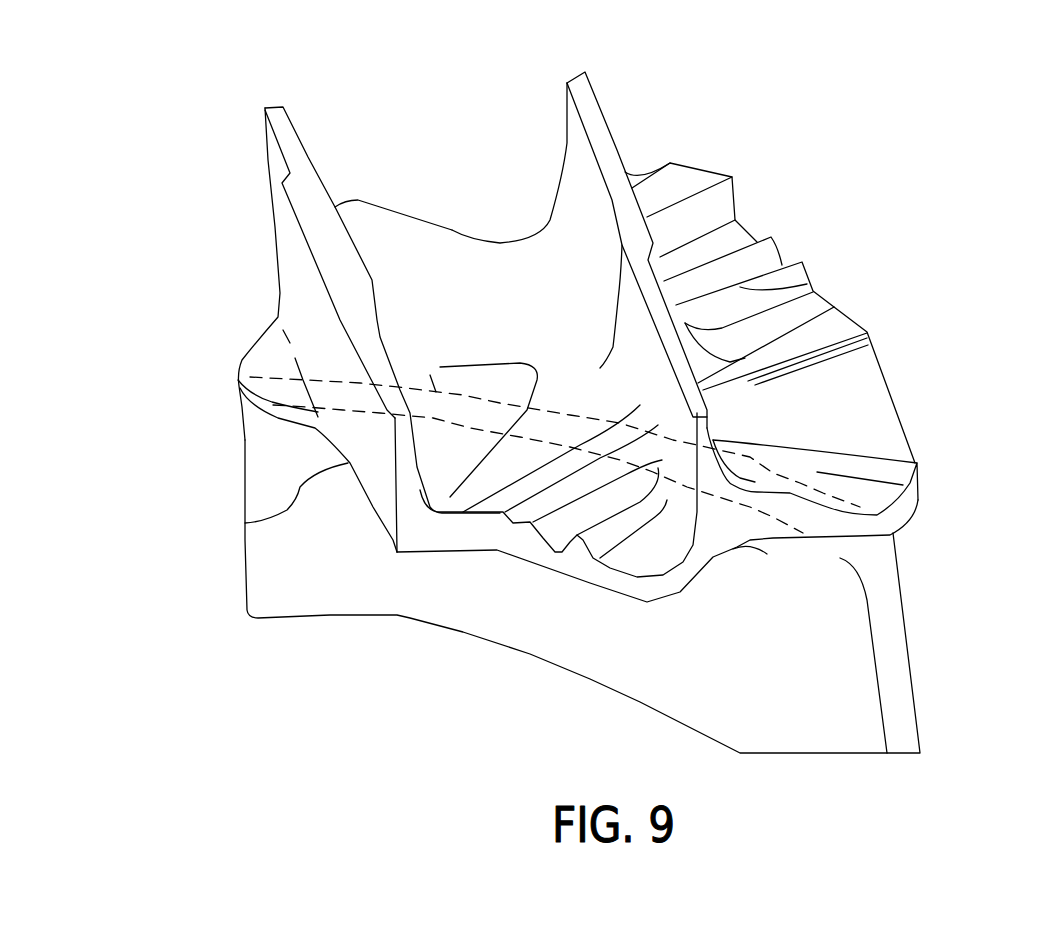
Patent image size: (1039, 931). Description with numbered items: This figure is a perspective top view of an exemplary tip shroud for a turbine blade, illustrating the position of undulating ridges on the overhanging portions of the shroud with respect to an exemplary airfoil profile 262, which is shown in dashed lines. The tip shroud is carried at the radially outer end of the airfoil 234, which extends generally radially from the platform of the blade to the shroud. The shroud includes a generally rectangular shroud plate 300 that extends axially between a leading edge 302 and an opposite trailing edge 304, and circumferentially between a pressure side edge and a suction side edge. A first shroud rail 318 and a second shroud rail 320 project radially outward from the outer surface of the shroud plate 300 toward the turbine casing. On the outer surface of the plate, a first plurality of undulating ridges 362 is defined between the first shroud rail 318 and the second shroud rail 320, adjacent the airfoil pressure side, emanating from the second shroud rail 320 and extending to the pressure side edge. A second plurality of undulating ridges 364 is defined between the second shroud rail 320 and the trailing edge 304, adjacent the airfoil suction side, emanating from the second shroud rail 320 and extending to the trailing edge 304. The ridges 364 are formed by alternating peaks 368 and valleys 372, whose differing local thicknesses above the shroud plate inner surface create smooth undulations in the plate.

The first shroud rail 318 is at (303, 188).
The second shroud rail 320 is at (595, 118).
The second plurality of undulating ridges 364 is at (823, 257).
The peaks 368 is at (747, 246).
The valleys 372 is at (777, 261).
The shroud plate 300 is at (863, 420).
The trailing edge 304 is at (907, 440).
The leading edge 302 is at (245, 523).
The airfoil 234 is at (296, 582).
The first plurality of undulating ridges 362 is at (467, 580).
The airfoil profile 262 is at (435, 390).